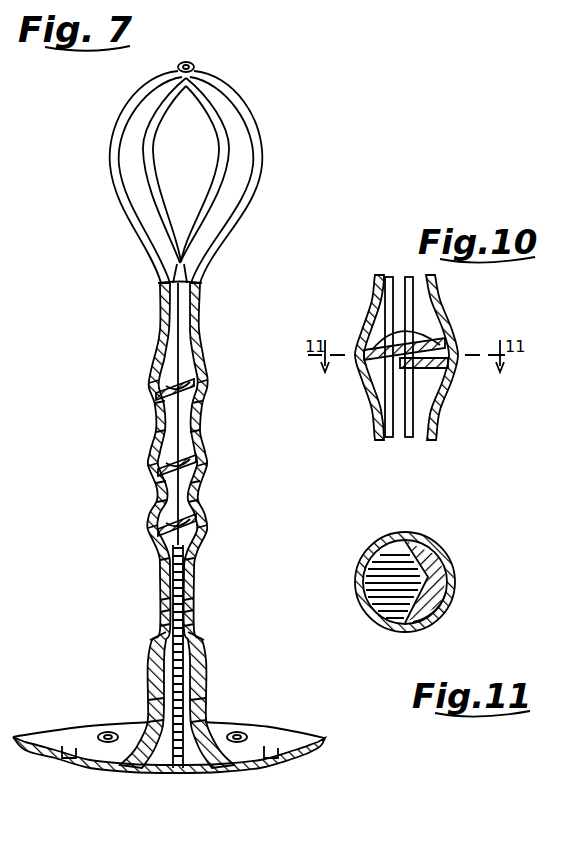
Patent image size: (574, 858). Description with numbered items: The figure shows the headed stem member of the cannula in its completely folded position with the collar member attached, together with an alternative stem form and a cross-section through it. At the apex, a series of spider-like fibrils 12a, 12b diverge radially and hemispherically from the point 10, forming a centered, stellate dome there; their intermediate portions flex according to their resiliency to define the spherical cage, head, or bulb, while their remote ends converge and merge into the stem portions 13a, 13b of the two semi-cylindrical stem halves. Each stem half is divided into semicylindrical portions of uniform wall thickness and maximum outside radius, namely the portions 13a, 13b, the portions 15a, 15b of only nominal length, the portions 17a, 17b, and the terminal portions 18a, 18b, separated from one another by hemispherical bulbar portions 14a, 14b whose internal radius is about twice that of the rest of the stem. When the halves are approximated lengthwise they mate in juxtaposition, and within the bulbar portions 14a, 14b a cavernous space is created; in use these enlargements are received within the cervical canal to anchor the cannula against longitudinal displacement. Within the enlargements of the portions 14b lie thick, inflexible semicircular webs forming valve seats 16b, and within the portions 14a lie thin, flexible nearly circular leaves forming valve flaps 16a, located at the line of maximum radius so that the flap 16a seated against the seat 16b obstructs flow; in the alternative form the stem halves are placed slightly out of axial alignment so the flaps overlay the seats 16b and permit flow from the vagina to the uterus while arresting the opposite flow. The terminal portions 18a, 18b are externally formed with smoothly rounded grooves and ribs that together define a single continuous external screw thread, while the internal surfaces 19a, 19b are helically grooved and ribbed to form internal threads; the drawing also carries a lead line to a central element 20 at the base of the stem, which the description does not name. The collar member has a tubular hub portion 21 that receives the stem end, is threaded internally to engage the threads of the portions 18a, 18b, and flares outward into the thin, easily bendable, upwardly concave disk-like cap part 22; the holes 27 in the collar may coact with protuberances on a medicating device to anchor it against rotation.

In FIG. 7, the point 10 is at (192, 65).
In FIG. 7, the fibrils 12a is at (155, 105).
In FIG. 7, the fibrils 12b is at (218, 122).
In FIG. 7, the stem portion 13a is at (160, 308).
In FIG. 7, the stem portion 13b is at (200, 318).
In FIG. 7, the bulbar portion 14a is at (150, 380).
In FIG. 10, the bulbar portion 14a is at (365, 372).
In FIG. 11, the bulbar portion 14a is at (362, 602).
In FIG. 7, the bulbar portion 14b is at (206, 390).
In FIG. 10, the bulbar portion 14b is at (455, 332).
In FIG. 11, the bulbar portion 14b is at (446, 560).
In FIG. 7, the stem portion 15a is at (158, 425).
In FIG. 7, the stem portion 15b is at (196, 428).
In FIG. 7, the valve flap 16a is at (162, 402).
In FIG. 10, the valve flap 16a is at (372, 318).
In FIG. 11, the valve flap 16a is at (385, 560).
In FIG. 7, the valve seat 16b is at (198, 378).
In FIG. 10, the valve seat 16b is at (440, 388).
In FIG. 11, the valve seat 16b is at (442, 612).
In FIG. 7, the stem portion 17a is at (160, 578).
In FIG. 7, the stem portion 17b is at (195, 585).
In FIG. 7, the terminal portion 18a is at (168, 662).
In FIG. 7, the terminal portion 18b is at (200, 662).
In FIG. 7, the internal surface 19a is at (170, 615).
In FIG. 7, the internal surface 19b is at (190, 612).
In FIG. 7, the threaded central rod 20 is at (178, 762).
In FIG. 7, the hub portion 21 is at (150, 690).
In FIG. 7, the cap part 22 is at (135, 772).
In FIG. 7, the holes 27 is at (66, 760).